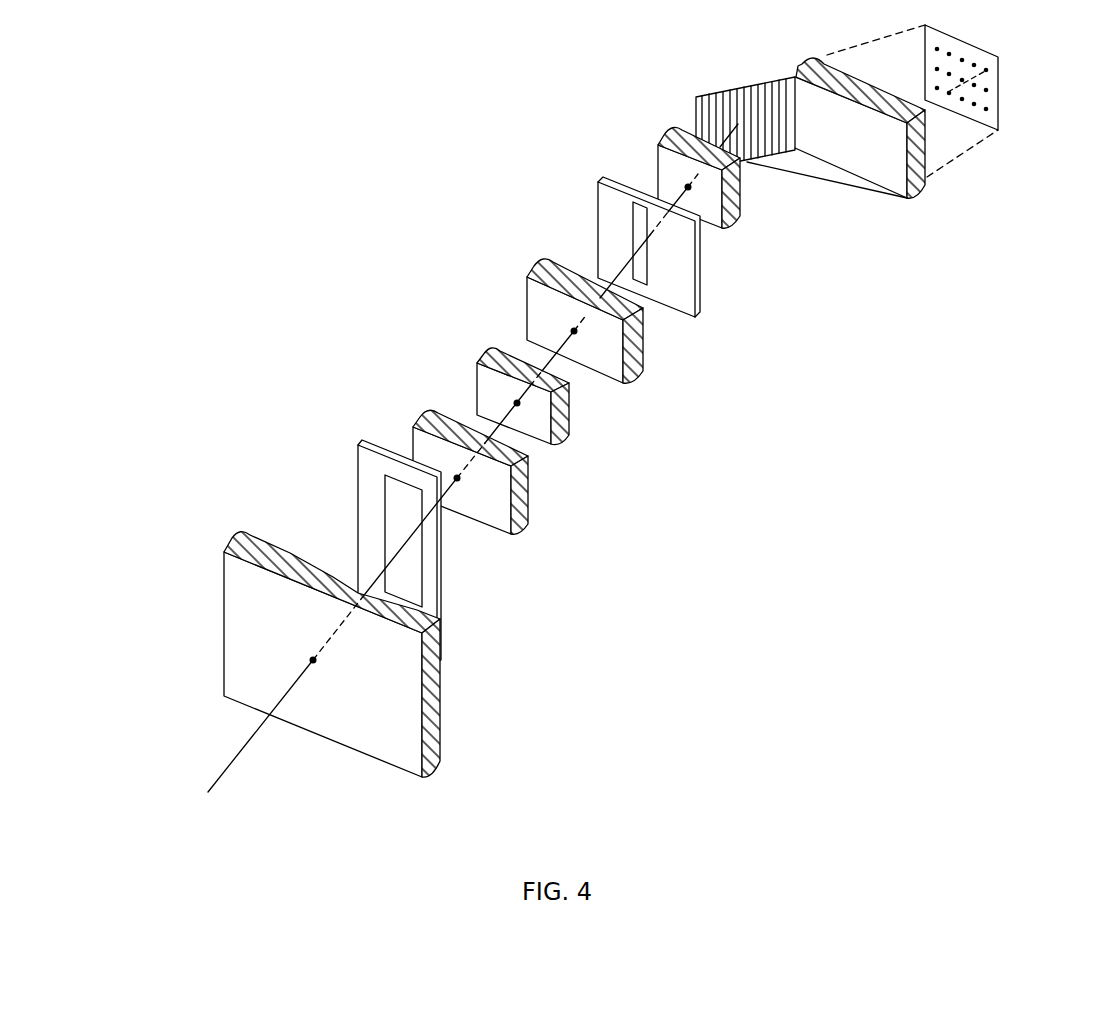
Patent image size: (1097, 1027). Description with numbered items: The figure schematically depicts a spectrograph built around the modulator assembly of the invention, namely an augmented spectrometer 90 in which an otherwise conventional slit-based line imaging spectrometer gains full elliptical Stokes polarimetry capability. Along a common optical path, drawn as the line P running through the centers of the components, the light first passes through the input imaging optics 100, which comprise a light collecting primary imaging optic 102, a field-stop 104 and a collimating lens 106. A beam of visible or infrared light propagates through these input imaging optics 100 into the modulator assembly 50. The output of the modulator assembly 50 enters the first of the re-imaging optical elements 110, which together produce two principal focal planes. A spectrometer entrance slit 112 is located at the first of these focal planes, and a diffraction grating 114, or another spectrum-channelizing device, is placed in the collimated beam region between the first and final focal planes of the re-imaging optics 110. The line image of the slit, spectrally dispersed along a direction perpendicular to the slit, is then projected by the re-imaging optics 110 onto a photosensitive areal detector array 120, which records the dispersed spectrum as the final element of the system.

The augmented spectrometer 90 is at (372, 177).
The input imaging optics 100 is at (628, 542).
The light collecting primary imaging optic 102 is at (223, 577).
The field-stop 104 is at (358, 457).
The collimating lens 106 is at (425, 413).
The modulator assembly 50 is at (570, 417).
The re-imaging optical elements 110 is at (917, 183).
The spectrometer entrance slit 112 is at (702, 310).
The diffraction grating 114 is at (710, 94).
The photosensitive areal detector array 120 is at (1000, 107).
The optical axis P is at (228, 760).